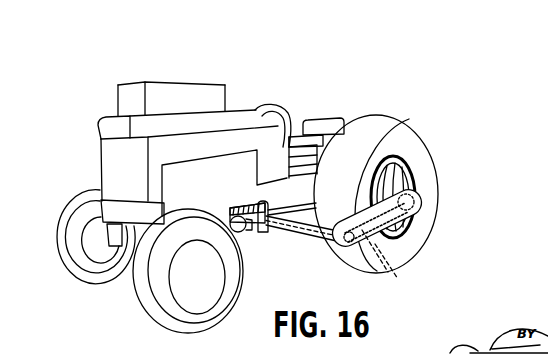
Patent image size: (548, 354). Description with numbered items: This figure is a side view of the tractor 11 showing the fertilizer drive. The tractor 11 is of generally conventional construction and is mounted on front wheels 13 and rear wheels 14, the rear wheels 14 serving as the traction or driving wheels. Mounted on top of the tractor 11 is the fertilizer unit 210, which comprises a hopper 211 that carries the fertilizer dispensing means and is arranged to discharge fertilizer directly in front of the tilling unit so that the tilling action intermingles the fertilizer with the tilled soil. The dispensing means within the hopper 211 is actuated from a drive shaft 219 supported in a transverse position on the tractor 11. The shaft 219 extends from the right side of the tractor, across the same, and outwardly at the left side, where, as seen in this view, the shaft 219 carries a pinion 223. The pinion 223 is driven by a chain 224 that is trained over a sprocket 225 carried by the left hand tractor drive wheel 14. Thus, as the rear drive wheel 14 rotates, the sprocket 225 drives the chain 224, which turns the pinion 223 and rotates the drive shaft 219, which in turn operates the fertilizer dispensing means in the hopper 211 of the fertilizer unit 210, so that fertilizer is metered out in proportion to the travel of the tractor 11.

The tractor 11 is at (89, 141).
The front wheels 13 is at (140, 293).
The rear wheels 14 is at (415, 133).
The fertilizer unit 210 is at (167, 76).
The hopper 211 is at (219, 95).
The drive shaft 219 is at (287, 223).
The pinion 223 is at (352, 208).
The chain 224 is at (382, 249).
The sprocket 225 is at (416, 234).